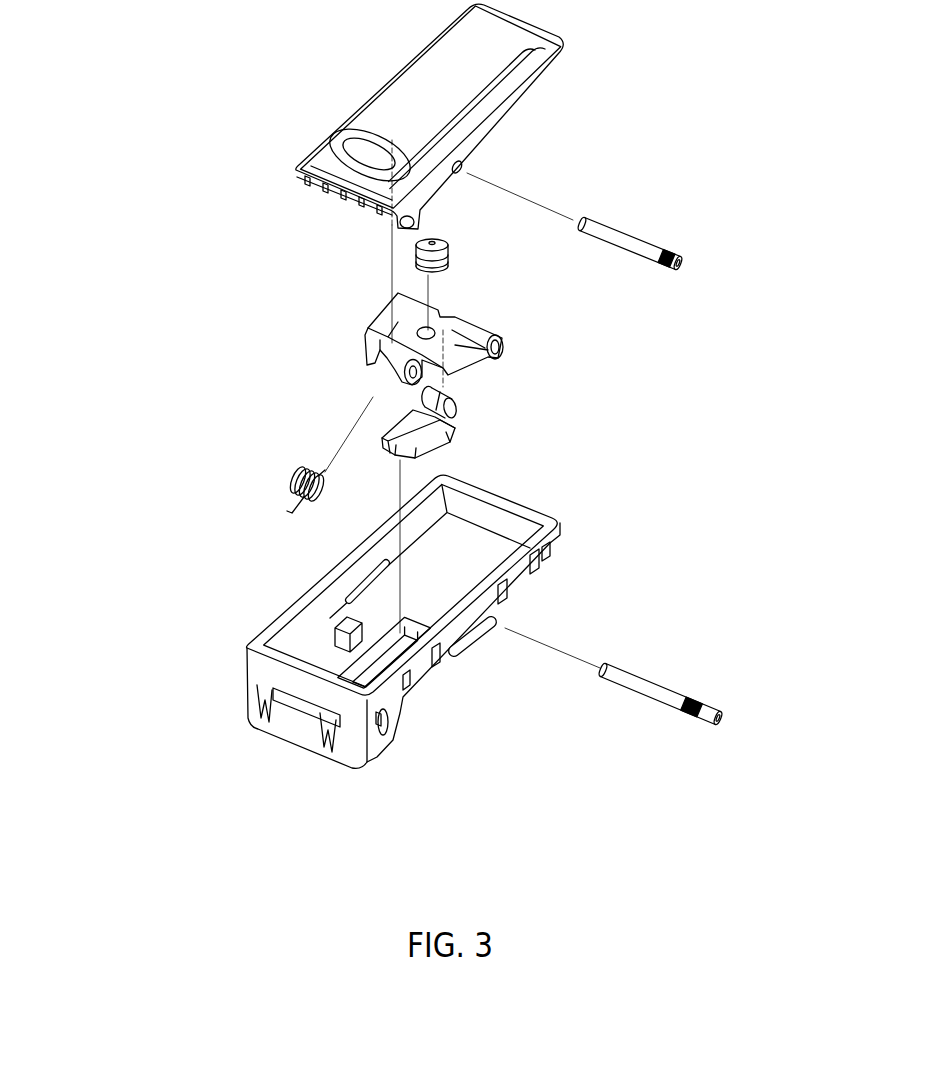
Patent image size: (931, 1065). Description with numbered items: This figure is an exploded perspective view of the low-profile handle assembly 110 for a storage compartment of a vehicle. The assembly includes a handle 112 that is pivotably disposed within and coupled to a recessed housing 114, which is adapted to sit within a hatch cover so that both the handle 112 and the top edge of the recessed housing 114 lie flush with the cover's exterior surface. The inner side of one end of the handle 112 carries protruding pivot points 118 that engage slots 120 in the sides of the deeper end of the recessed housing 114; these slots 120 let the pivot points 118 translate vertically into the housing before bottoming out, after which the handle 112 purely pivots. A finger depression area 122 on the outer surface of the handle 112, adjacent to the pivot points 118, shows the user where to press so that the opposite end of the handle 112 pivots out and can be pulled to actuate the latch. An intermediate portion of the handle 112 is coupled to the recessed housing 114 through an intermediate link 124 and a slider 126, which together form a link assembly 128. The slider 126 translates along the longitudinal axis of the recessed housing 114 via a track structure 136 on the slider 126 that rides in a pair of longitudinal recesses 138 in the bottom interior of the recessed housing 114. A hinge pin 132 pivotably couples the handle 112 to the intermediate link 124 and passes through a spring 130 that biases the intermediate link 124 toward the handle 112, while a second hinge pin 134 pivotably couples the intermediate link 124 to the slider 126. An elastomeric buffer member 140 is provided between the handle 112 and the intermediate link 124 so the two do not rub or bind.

The low-profile handle assembly 110 is at (300, 375).
The handle 112 is at (356, 89).
The recessed housing 114 is at (291, 606).
The protruding pivot points 118 is at (293, 171).
The slots 120 is at (394, 746).
The finger depression area 122 is at (326, 129).
The intermediate link 124 is at (356, 317).
The slider 126 is at (466, 426).
The link assembly 128 is at (497, 372).
The spring 130 is at (291, 478).
The hinge pin 132 is at (637, 232).
The hinge pin 134 is at (670, 677).
The track structure 136 is at (453, 455).
The longitudinal recesses 138 is at (481, 656).
The buffer member 140 is at (452, 265).